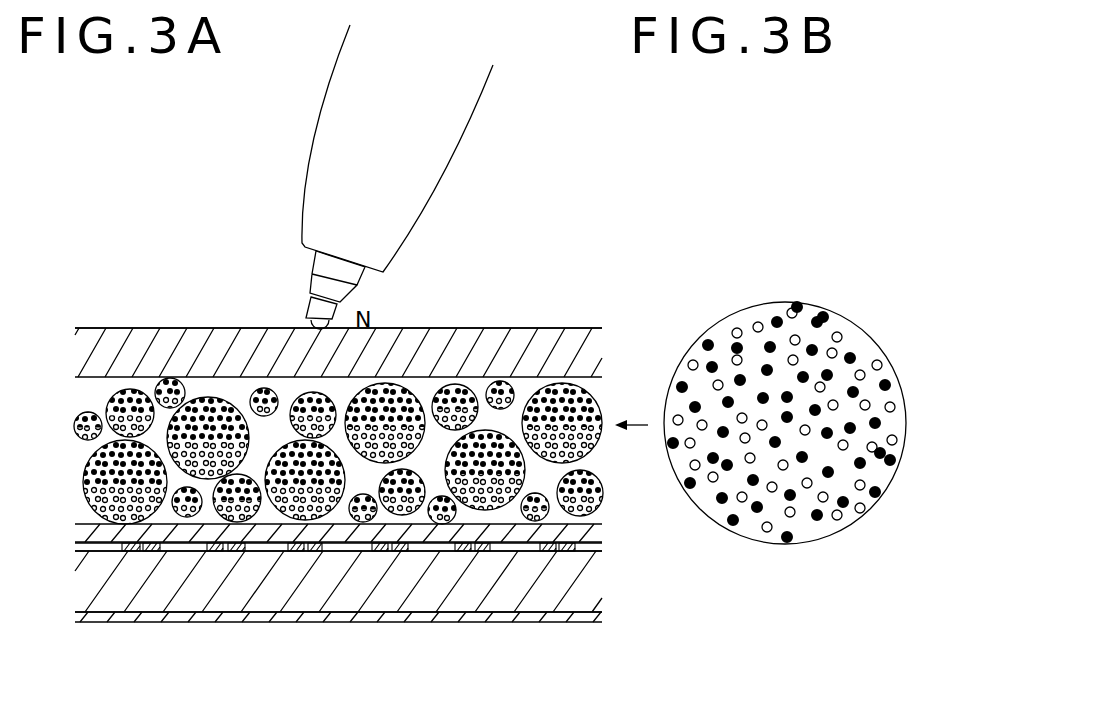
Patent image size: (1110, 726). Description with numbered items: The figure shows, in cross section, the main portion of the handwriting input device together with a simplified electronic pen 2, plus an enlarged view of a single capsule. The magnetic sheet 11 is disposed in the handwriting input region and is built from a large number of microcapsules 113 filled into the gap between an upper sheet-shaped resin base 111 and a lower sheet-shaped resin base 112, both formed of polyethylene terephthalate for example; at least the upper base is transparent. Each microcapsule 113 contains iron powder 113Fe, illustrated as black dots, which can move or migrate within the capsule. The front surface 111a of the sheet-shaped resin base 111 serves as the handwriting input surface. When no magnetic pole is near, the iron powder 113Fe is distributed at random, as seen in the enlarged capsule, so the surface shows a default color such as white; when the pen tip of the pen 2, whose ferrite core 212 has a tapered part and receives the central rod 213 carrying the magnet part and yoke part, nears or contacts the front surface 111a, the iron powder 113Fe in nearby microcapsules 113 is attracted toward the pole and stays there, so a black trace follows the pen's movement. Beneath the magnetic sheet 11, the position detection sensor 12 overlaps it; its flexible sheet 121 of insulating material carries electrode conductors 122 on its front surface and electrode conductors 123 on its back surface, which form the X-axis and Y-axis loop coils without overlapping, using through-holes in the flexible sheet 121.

In FIG. 3A, the electronic pen 2 is at (366, 177).
In FIG. 3A, the ferrite core 212 is at (325, 262).
In FIG. 3A, the central rod 213 is at (308, 319).
In FIG. 3A, the magnetic sheet 11 is at (317, 388).
In FIG. 3A, the sheet-shaped resin base 111 is at (127, 340).
In FIG. 3A, the front surface 111a is at (220, 328).
In FIG. 3A, the microcapsule 113 is at (340, 398).
In FIG. 3B, the microcapsule 113 is at (785, 431).
In FIG. 3A, the iron powder 113Fe is at (552, 383).
In FIG. 3B, the iron powder 113Fe is at (757, 513).
In FIG. 3A, the sheet-shaped resin base 112 is at (592, 537).
In FIG. 3A, the position detection sensor 12 is at (312, 612).
In FIG. 3A, the flexible sheet 121 is at (245, 580).
In FIG. 3A, the electrode conductor 122 is at (220, 548).
In FIG. 3A, the electrode conductor 123 is at (338, 620).